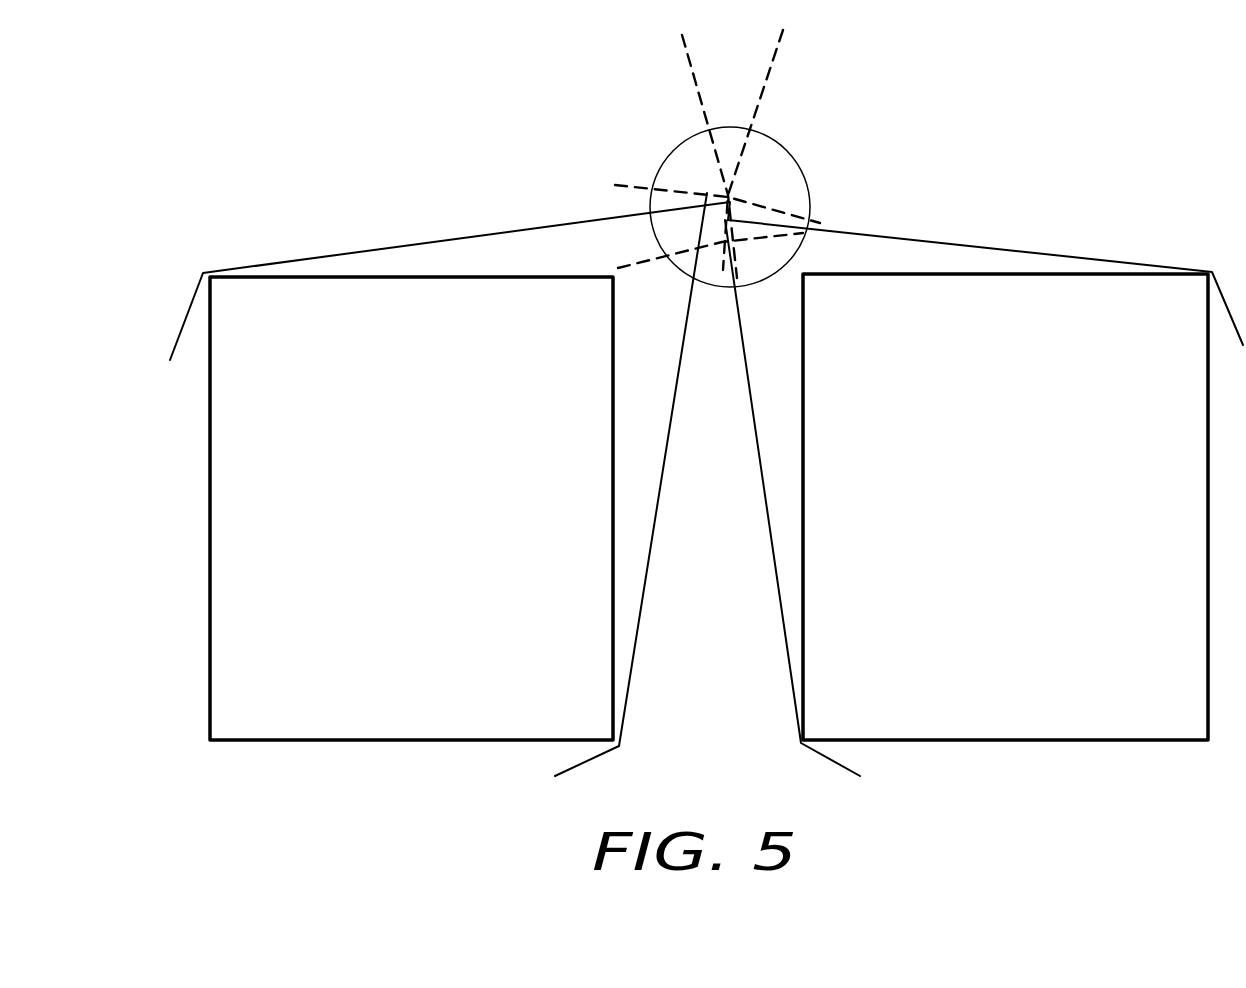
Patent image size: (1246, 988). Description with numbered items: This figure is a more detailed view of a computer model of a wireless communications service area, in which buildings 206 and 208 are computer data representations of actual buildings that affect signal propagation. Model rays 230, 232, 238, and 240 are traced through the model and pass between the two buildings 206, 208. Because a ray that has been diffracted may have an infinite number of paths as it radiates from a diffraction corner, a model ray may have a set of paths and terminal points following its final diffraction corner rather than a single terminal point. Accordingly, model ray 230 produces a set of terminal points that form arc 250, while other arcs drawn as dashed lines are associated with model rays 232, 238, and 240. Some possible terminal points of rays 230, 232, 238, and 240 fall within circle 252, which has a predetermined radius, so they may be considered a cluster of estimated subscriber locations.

The building 206 is at (435, 495).
The building 208 is at (1028, 495).
The model ray 230 is at (490, 232).
The model ray 232 is at (650, 558).
The model ray 238 is at (933, 238).
The model ray 240 is at (763, 497).
The arc 250 is at (695, 68).
The circle 252 is at (780, 143).